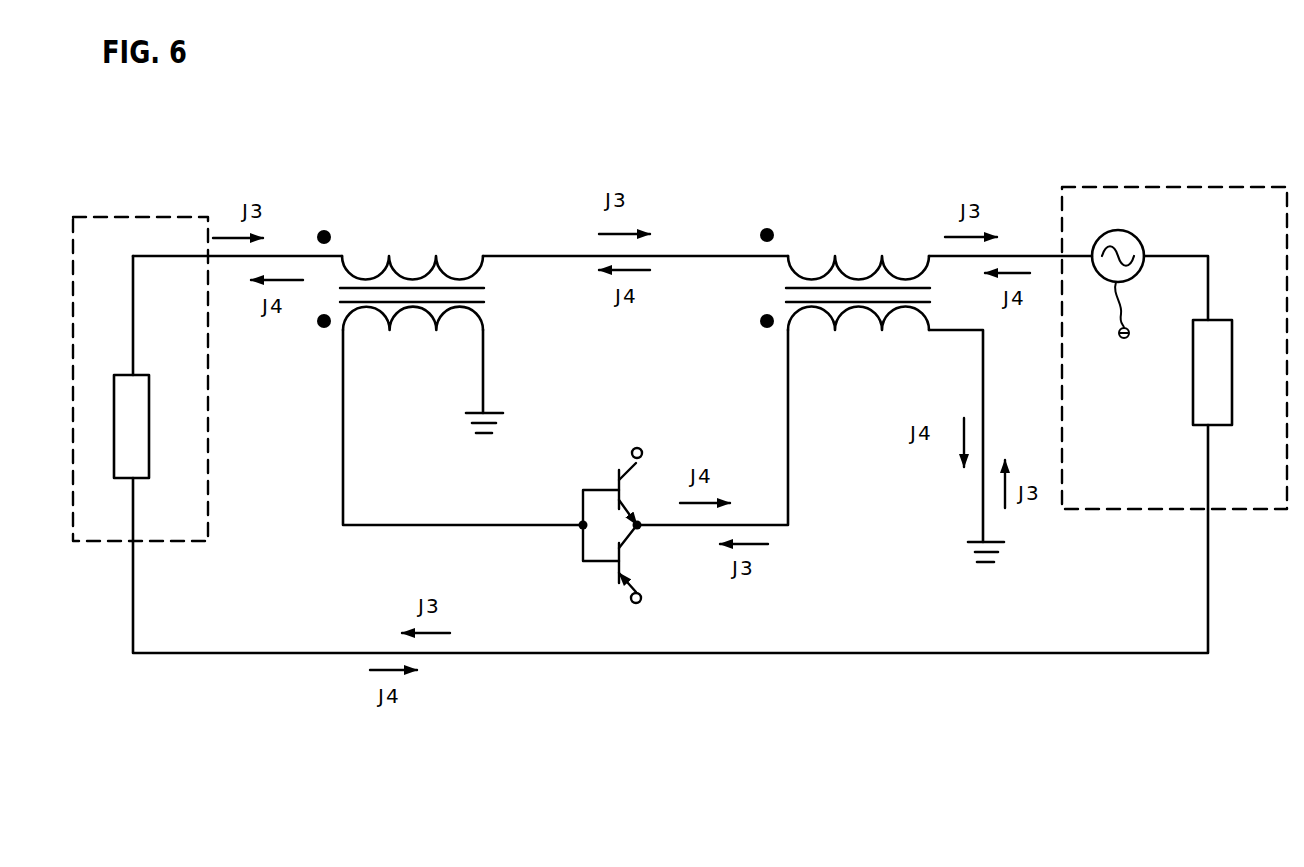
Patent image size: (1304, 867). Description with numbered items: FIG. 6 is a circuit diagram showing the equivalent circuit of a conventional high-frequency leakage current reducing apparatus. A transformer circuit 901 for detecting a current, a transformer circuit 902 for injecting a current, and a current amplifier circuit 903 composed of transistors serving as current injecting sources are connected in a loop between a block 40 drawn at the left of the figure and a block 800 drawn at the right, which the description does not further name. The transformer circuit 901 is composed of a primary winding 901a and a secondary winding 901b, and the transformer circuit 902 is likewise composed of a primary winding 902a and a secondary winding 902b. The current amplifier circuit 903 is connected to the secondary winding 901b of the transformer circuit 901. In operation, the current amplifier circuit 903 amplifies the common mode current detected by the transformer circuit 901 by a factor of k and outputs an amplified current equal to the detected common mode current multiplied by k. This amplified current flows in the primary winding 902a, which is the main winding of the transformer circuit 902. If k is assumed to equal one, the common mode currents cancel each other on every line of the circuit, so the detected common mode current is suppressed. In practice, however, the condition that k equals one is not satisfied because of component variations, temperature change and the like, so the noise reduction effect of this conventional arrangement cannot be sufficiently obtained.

The measurement unit with measuring impedance Zm 40 is at (165, 215).
The combined impedance unit (41+42) with AC source and impedance Z 800 is at (1103, 185).
The transformer circuit for detecting a current 901 is at (414, 279).
The primary winding 901a is at (462, 277).
The secondary winding 901b is at (365, 318).
The transformer circuit for injecting a current 902 is at (830, 281).
The primary winding 902a is at (912, 277).
The secondary winding 902b is at (805, 318).
The current amplifier circuit 903 is at (575, 555).